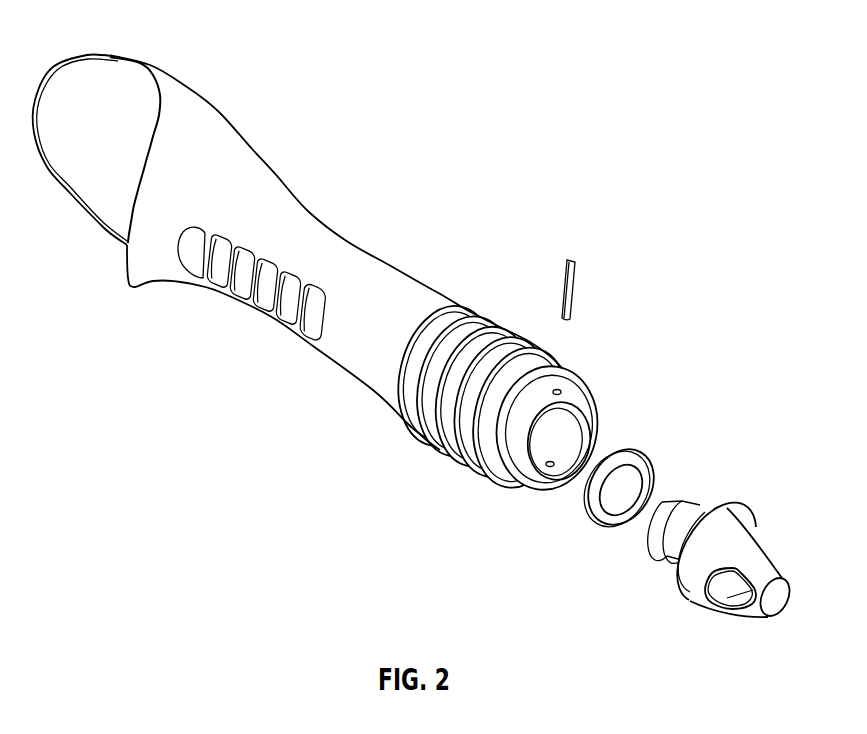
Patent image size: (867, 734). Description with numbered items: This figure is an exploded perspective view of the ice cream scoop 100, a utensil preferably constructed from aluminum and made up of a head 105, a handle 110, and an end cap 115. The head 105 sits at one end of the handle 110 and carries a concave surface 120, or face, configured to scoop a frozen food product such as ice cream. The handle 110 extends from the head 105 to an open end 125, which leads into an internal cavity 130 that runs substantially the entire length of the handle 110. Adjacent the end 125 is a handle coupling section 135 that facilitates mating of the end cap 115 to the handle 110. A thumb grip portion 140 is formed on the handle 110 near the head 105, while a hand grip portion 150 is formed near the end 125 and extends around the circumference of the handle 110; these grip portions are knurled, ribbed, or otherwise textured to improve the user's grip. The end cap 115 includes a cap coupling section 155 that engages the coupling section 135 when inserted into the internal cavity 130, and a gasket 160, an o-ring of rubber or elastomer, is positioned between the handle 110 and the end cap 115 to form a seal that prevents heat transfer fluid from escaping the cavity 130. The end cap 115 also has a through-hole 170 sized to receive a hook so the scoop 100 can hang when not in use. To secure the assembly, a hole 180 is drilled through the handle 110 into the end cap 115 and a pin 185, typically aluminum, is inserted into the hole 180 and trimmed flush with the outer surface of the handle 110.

The ice cream scoop 100 is at (439, 328).
The head 105 is at (101, 124).
The handle 110 is at (336, 252).
The end cap 115 is at (767, 572).
The concave surface 120 is at (104, 157).
The end 125 is at (547, 457).
The internal cavity 130 is at (589, 441).
The handle coupling section 135 is at (576, 400).
The thumb grip portion 140 is at (252, 289).
The hand grip portion 150 is at (483, 402).
The cap coupling section 155 is at (702, 523).
The gasket 160 is at (617, 511).
The through-hole 170 is at (724, 610).
The hole 180 is at (519, 315).
The pin 185 is at (604, 288).